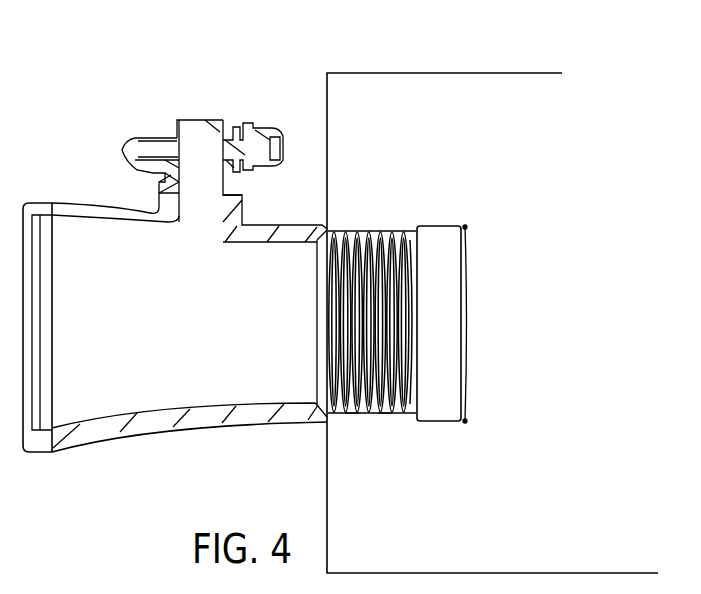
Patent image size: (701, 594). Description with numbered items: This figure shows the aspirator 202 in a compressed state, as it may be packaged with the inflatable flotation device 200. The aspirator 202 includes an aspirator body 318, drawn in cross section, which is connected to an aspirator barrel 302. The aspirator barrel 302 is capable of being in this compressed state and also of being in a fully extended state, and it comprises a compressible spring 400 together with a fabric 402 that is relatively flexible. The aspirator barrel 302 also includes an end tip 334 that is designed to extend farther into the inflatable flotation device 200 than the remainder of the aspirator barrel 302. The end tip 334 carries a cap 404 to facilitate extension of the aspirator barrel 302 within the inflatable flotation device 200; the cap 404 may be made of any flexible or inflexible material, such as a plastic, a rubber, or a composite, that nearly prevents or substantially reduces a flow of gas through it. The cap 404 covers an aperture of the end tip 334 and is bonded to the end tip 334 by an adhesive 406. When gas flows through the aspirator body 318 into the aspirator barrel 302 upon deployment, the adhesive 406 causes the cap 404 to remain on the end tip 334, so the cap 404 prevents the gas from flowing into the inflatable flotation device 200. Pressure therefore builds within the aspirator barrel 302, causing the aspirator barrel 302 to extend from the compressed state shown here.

The inflatable flotation device 200 is at (371, 73).
The aspirator 202 is at (221, 72).
The aspirator body 318 is at (98, 208).
The aspirator barrel 302 is at (372, 229).
The end tip 334 is at (438, 225).
The compressible spring 400 is at (385, 414).
The fabric 402 is at (352, 414).
The cap 404 is at (467, 320).
The adhesive 406 is at (467, 227).